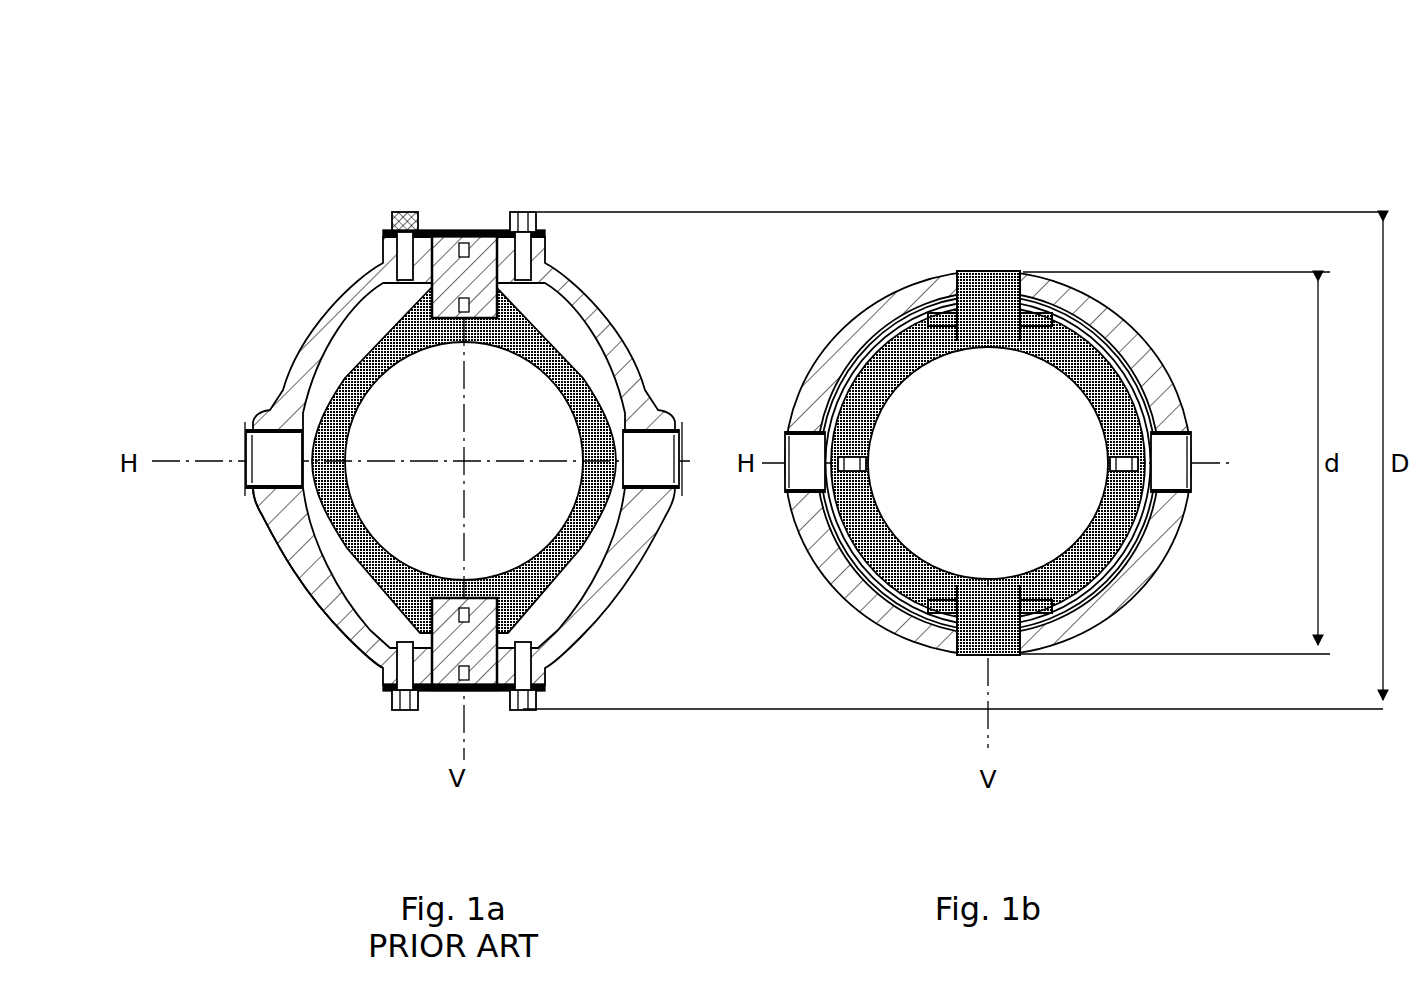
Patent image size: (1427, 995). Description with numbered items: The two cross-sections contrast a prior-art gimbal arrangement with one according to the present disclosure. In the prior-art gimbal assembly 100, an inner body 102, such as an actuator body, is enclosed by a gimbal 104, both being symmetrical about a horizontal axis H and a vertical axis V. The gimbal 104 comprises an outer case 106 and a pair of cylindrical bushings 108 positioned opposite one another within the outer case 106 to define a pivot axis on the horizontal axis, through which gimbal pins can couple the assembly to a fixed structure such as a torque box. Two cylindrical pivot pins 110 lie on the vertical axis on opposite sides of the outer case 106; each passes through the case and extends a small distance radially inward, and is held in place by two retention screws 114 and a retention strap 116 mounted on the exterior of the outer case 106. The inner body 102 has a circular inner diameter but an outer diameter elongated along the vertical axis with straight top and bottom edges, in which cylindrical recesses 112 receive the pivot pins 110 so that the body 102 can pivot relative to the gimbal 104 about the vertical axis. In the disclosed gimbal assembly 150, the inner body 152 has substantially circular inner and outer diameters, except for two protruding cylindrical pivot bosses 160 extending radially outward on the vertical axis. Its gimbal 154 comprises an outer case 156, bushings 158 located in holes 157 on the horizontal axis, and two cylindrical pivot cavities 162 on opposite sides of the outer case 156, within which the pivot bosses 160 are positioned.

In FIG. 1A, the gimbal assembly 100 is at (435, 452).
In FIG. 1A, the inner body 102 is at (373, 575).
In FIG. 1A, the gimbal 104 is at (310, 632).
In FIG. 1A, the outer case 106 is at (620, 300).
In FIG. 1A, the bushings 108 is at (275, 452).
In FIG. 1A, the pivot pins 110 is at (480, 268).
In FIG. 1A, the cylindrical recesses 112 is at (425, 300).
In FIG. 1A, the retention screws 114 is at (397, 217).
In FIG. 1A, the retention strap 116 is at (453, 230).
In FIG. 1B, the gimbal assembly 150 is at (1036, 452).
In FIG. 1B, the inner body 152 is at (903, 585).
In FIG. 1B, the gimbal 154 is at (892, 272).
In FIG. 1B, the outer case 156 is at (1109, 603).
In FIG. 1B, the holes 157 is at (816, 440).
In FIG. 1B, the bushings 158 is at (790, 410).
In FIG. 1B, the pivot bosses 160 is at (990, 293).
In FIG. 1B, the pivot cavities 162 is at (1042, 273).